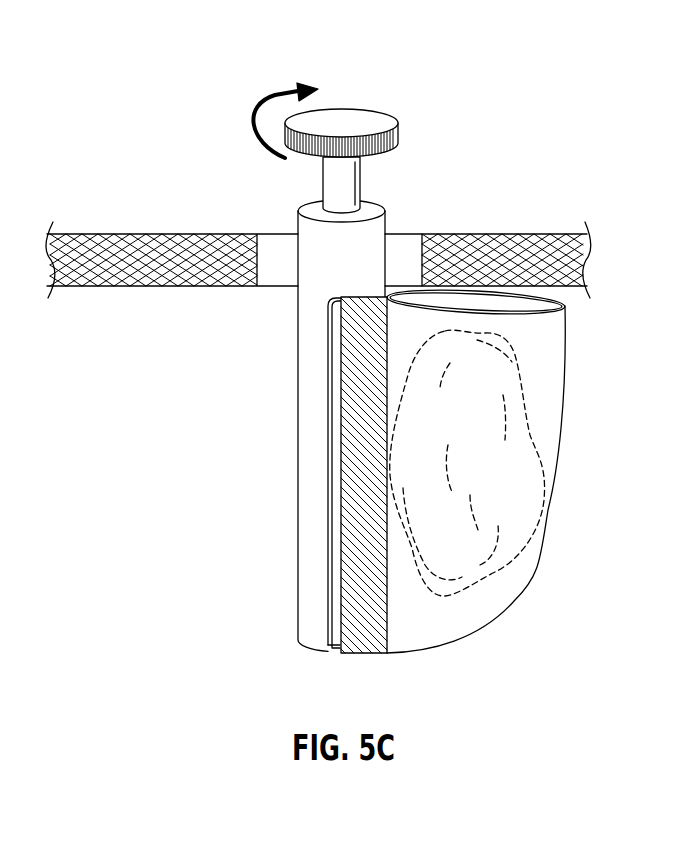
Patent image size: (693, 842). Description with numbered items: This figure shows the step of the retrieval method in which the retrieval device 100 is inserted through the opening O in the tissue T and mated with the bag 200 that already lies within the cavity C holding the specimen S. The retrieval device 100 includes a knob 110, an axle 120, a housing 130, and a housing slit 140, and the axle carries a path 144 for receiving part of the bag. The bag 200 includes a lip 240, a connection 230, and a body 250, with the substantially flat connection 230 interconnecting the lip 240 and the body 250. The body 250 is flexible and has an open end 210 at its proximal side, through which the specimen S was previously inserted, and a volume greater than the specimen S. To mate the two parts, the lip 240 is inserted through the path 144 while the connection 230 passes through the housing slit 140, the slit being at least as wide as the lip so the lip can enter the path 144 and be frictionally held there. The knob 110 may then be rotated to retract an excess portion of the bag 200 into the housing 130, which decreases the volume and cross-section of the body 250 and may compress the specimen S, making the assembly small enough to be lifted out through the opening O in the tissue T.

The retrieval device 100 is at (311, 371).
The knob 110 is at (383, 122).
The axle 120 is at (330, 187).
The housing 130 is at (307, 403).
The housing slit 140 is at (340, 503).
The path 144 is at (337, 645).
The bag 200 is at (448, 469).
The open end 210 is at (566, 306).
The connection 230 is at (353, 347).
The lip 240 is at (335, 455).
The body 250 is at (470, 603).
The tissue T is at (150, 238).
The opening O is at (401, 262).
The cavity C is at (178, 407).
The specimen S is at (535, 460).